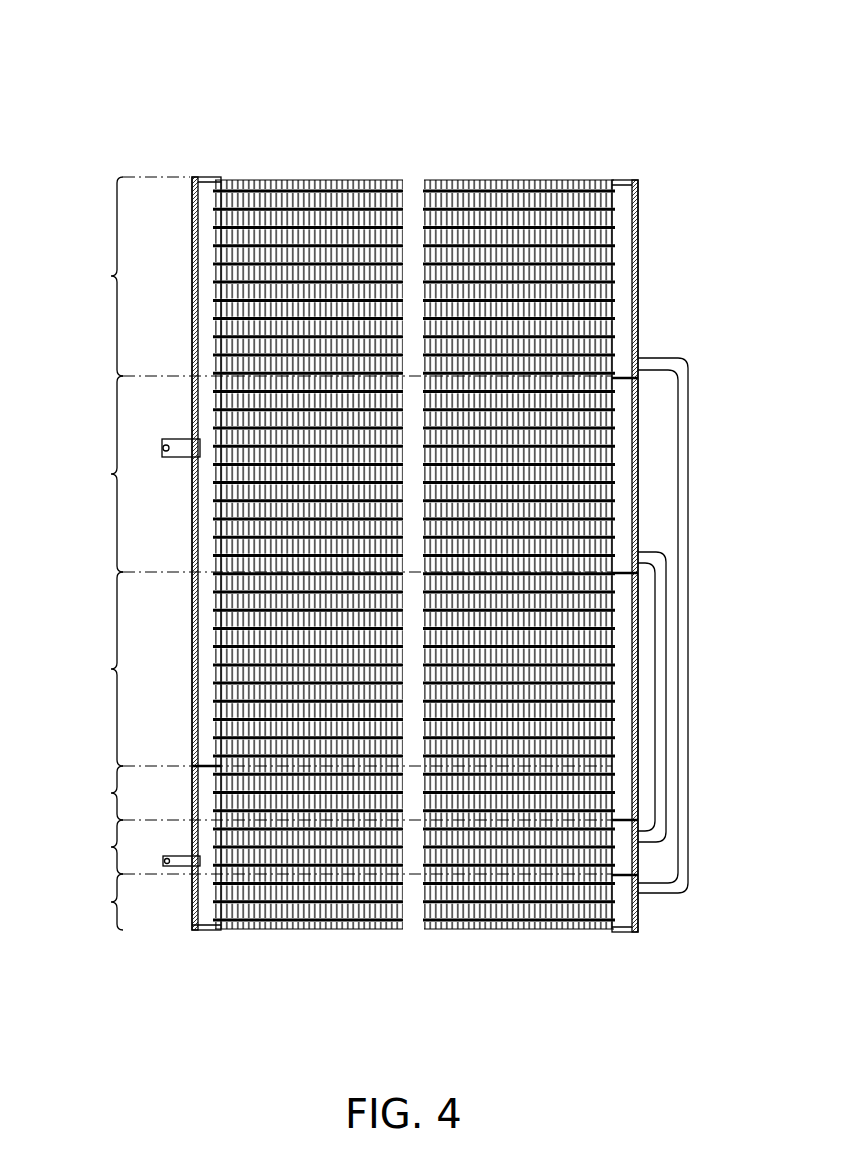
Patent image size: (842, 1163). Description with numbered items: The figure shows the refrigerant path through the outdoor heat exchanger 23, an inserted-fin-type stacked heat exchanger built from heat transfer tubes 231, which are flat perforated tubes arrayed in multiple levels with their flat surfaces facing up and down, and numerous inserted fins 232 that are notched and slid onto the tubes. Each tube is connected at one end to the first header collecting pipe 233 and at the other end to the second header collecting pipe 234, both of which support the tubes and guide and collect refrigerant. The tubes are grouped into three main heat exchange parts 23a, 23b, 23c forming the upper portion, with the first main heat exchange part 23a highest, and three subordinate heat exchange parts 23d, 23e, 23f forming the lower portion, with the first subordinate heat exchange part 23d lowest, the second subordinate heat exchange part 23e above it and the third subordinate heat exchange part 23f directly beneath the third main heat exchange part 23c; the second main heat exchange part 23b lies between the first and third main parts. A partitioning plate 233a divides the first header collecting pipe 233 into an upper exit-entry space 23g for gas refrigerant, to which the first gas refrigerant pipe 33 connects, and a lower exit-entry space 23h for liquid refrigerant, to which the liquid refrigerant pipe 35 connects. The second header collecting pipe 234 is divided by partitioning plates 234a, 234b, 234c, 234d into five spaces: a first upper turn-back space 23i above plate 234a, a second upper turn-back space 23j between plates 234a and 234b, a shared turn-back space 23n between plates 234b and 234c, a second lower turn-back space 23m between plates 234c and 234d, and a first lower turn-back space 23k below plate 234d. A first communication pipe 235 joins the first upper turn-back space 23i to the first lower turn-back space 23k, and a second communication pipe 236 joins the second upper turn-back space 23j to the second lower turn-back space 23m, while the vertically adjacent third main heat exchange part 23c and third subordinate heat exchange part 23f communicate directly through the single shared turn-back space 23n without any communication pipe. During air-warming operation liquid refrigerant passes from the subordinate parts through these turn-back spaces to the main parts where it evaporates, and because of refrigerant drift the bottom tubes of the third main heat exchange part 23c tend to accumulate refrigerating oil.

The outdoor heat exchanger 23 is at (649, 97).
The heat transfer tubes 231 is at (486, 181).
The inserted fins 232 is at (564, 181).
The first header collecting pipe 233 is at (173, 524).
The partitioning plate 233a is at (205, 766).
The second header collecting pipe 234 is at (686, 528).
The partitioning plate 234a is at (634, 374).
The partitioning plate 234b is at (634, 570).
The partitioning plate 234c is at (636, 818).
The partitioning plate 234d is at (640, 875).
The first communication pipe 235 is at (690, 366).
The second communication pipe 236 is at (660, 633).
The first gas refrigerant pipe 33 is at (182, 438).
The liquid refrigerant pipe 35 is at (176, 856).
The first main heat exchange part 23a is at (91, 276).
The second main heat exchange part 23b is at (91, 474).
The third main heat exchange part 23c is at (91, 669).
The first subordinate heat exchange part 23d is at (91, 902).
The second subordinate heat exchange part 23e is at (91, 847).
The third subordinate heat exchange part 23f is at (91, 793).
The upper exit-entry space 23g is at (206, 308).
The lower exit-entry space 23h is at (207, 818).
The first upper turn-back space 23i is at (628, 276).
The second upper turn-back space 23j is at (624, 489).
The first lower turn-back space 23k is at (630, 917).
The second lower turn-back space 23m is at (629, 852).
The shared turn-back space 23n is at (626, 714).